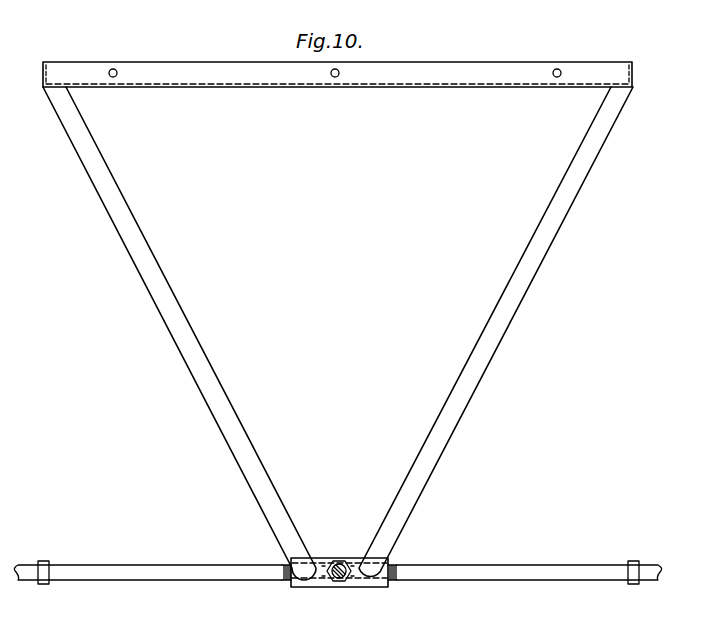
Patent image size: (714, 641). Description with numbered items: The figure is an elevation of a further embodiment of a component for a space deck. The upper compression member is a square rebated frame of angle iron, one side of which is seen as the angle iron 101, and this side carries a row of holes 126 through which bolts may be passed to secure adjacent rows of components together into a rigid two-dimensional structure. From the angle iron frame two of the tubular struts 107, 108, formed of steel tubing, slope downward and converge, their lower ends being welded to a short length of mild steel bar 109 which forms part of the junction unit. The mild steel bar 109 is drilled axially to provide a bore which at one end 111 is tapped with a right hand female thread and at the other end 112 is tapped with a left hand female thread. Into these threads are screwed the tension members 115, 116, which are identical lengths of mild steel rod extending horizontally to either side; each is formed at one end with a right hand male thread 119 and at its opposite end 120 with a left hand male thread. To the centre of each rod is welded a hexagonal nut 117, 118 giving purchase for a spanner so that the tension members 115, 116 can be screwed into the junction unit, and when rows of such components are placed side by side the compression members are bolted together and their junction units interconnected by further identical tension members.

The angle iron 101 is at (432, 85).
The tubular strut 107 is at (178, 318).
The tubular strut 108 is at (502, 316).
The mild steel bar 109 is at (357, 579).
The end of bore 111 is at (290, 583).
The end of bore 112 is at (390, 581).
The tension member 115 is at (134, 572).
The tension member 116 is at (478, 571).
The hexagonal nut 117 is at (46, 563).
The hexagonal nut 118 is at (630, 563).
The male thread 119 is at (289, 566).
The male thread 120 is at (390, 566).
The holes 126 is at (114, 78).